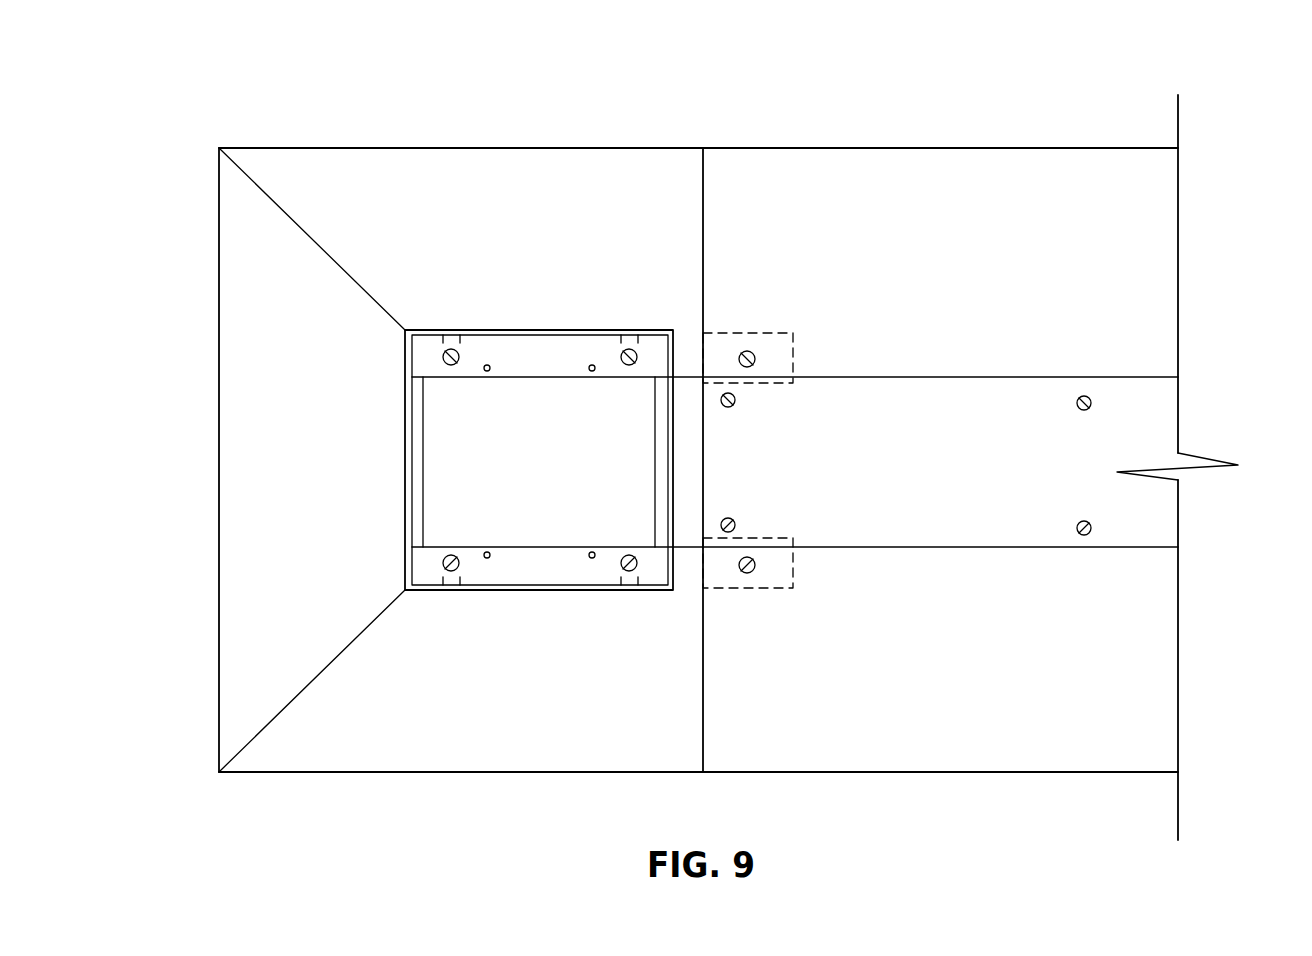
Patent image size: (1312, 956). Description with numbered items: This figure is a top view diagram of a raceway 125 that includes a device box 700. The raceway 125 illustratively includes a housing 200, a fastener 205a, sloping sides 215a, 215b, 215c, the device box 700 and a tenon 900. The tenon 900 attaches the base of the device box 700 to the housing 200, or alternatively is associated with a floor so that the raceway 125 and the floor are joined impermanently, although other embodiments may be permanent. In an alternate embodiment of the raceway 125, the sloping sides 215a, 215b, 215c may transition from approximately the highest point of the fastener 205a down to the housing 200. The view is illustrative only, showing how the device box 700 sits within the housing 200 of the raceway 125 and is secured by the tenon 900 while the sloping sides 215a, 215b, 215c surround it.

The raceway 125 is at (984, 106).
The housing 200 is at (1180, 626).
The fastener 205a is at (1160, 408).
The sloping side 215a is at (463, 160).
The sloping side 215b is at (235, 456).
The sloping side 215c is at (480, 760).
The device box 700 is at (535, 566).
The tenon 900 is at (748, 351).